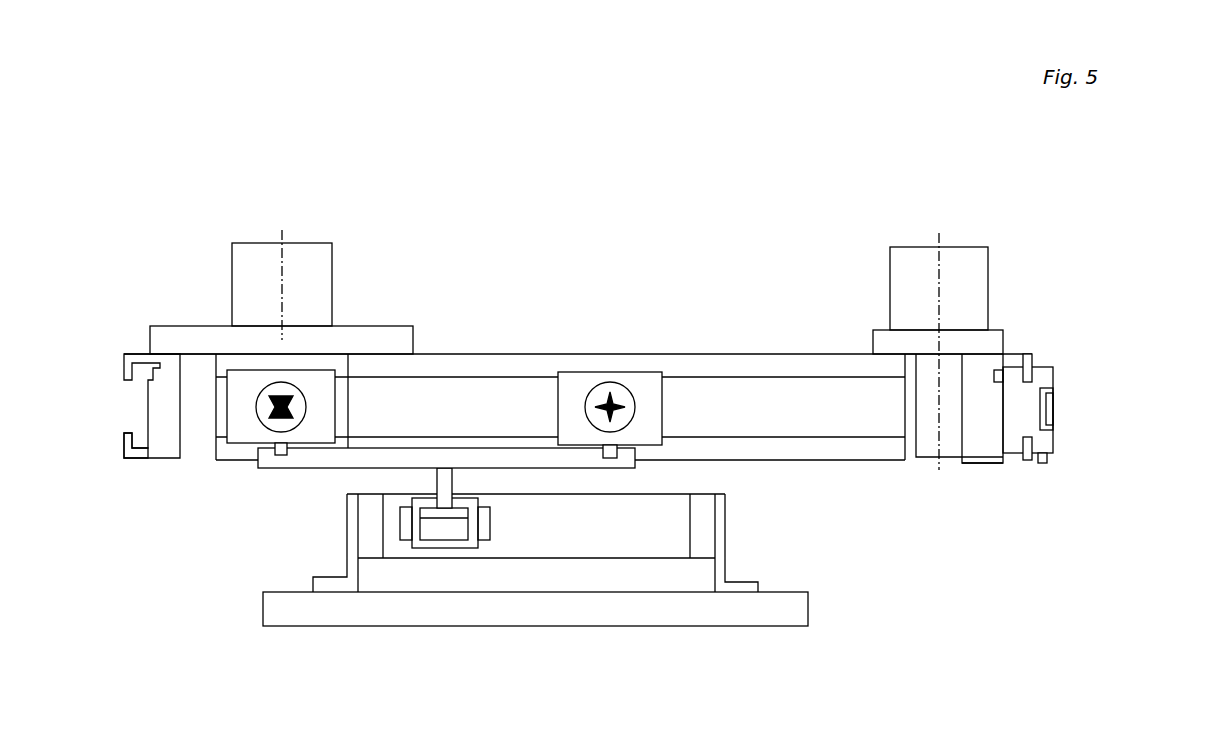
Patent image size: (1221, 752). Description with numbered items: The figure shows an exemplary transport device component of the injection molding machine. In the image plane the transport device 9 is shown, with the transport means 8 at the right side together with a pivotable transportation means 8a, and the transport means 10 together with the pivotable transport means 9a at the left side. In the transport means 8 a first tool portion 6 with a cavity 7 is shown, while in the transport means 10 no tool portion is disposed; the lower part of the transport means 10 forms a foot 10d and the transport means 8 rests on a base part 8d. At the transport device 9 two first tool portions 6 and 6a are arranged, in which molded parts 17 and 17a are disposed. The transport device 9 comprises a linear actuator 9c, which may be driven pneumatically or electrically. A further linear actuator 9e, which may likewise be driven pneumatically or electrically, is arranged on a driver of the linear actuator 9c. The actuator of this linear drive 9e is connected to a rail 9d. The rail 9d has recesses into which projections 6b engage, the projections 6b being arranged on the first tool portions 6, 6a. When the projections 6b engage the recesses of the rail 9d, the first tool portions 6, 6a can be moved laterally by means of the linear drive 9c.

The first tool portion 6 is at (632, 362).
The first tool portion 6a is at (338, 380).
The projections 6b is at (266, 456).
The cavity 7 is at (1057, 405).
The transport means 8 is at (982, 465).
The pivotable transportation means 8a is at (997, 285).
The holder base plate 8d is at (1022, 465).
The transport device 9 is at (762, 403).
The pivotable transport means 9a is at (340, 282).
The linear actuator 9c is at (652, 532).
The rail 9d is at (298, 472).
The linear actuator 9e is at (440, 528).
The transport means 10 is at (147, 408).
The holder foot 10d is at (123, 462).
The molded part 17 is at (620, 415).
The molded part 17a is at (270, 415).